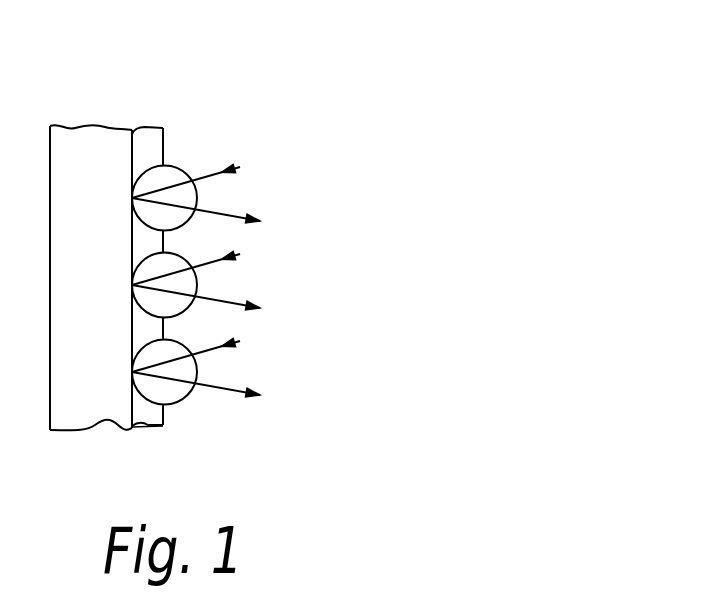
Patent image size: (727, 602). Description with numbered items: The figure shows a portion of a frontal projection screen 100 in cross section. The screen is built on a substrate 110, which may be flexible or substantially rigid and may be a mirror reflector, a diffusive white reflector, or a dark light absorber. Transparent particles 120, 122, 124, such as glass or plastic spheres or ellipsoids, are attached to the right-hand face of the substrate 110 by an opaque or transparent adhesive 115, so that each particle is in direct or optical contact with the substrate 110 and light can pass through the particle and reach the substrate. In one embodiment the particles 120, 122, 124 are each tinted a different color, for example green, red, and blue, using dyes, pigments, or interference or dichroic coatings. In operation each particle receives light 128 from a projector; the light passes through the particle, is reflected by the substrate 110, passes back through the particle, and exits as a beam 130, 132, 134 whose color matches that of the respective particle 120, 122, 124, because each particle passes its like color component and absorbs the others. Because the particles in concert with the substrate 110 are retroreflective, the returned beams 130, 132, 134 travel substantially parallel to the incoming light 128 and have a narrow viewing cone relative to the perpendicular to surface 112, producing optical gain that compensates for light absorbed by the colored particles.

The frontal projection screen 100 is at (226, 84).
The substrate 110 is at (112, 276).
The surface 112 is at (137, 135).
The adhesive 115 is at (148, 423).
The transparent particle 120 is at (177, 171).
The transparent particle 122 is at (182, 264).
The transparent particle 124 is at (176, 403).
The light 128 is at (212, 176).
The beam 130 is at (193, 212).
The beam 132 is at (205, 298).
The beam 134 is at (205, 384).